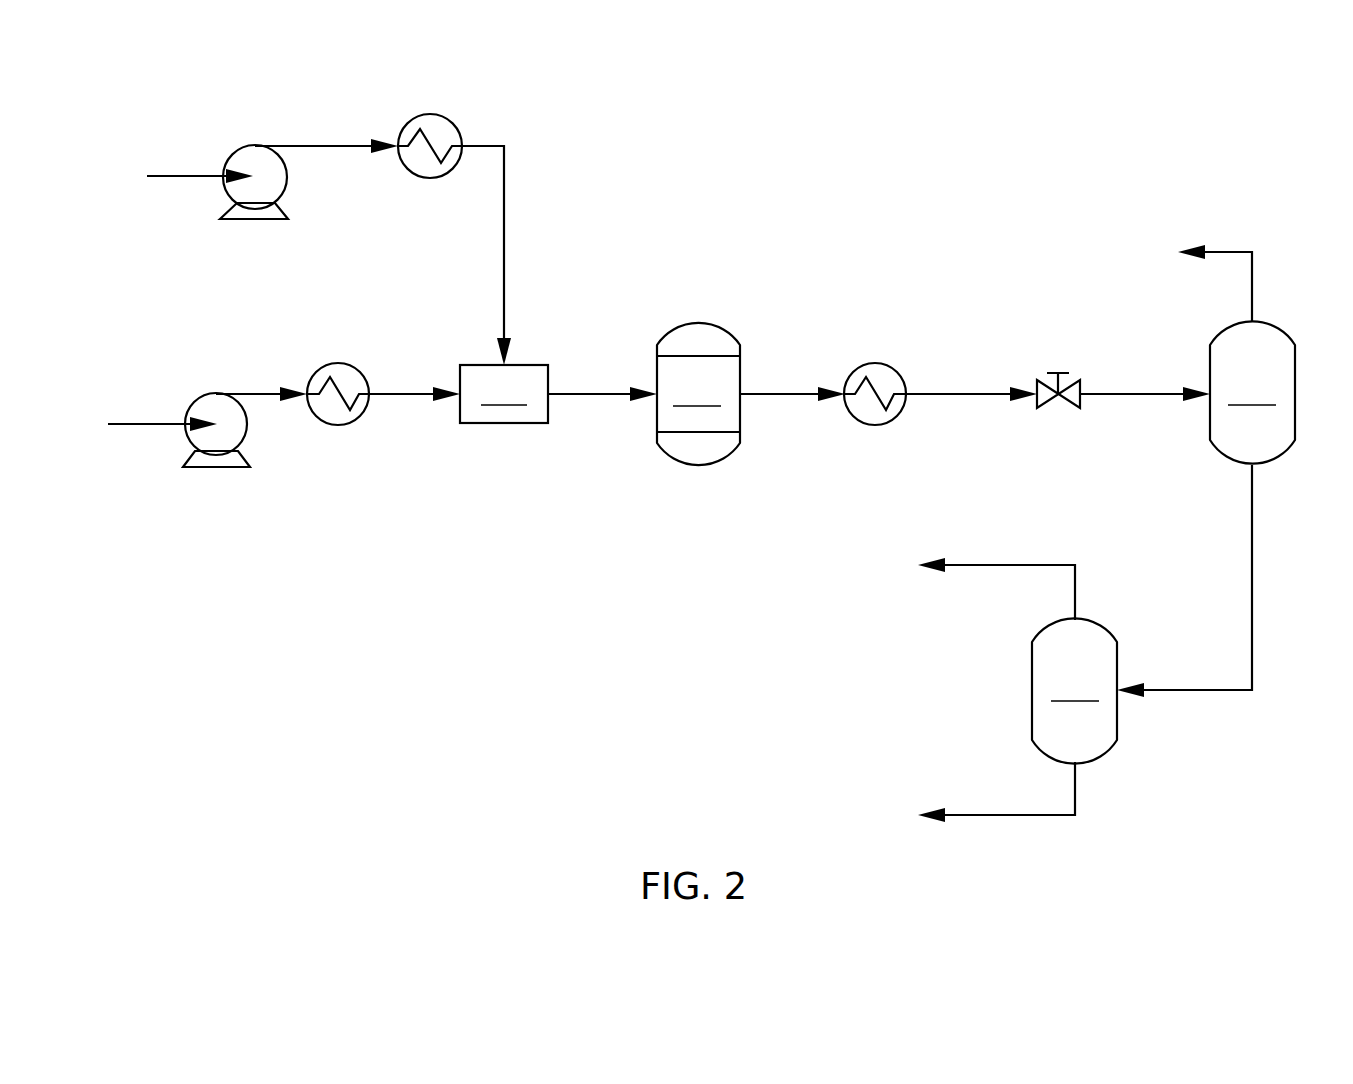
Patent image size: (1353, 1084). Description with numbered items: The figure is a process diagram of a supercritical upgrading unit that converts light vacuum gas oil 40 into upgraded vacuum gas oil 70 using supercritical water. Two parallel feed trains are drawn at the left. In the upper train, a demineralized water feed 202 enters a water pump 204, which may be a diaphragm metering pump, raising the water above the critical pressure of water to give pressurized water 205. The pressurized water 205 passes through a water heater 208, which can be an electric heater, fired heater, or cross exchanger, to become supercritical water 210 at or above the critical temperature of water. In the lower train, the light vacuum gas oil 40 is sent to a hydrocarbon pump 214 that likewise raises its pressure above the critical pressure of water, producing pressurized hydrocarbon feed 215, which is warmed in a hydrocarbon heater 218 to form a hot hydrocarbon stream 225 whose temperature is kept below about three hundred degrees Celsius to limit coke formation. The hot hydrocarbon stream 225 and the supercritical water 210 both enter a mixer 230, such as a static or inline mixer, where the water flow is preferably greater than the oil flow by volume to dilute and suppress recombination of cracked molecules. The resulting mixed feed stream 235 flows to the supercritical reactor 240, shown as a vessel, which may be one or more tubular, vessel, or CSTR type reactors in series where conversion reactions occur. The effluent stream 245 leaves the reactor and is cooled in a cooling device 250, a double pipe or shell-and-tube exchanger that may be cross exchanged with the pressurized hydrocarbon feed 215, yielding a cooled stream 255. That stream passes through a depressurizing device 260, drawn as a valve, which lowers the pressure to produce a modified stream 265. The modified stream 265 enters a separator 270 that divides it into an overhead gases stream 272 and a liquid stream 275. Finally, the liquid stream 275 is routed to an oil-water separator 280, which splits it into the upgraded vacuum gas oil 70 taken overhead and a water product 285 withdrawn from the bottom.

The light vacuum gas oil 40 is at (145, 424).
The upgraded vacuum gas oil 70 is at (1005, 563).
The water feed 202 is at (178, 175).
The water pump 204 is at (247, 220).
The pressurized water 205 is at (317, 145).
The water heater 208 is at (430, 178).
The supercritical water 210 is at (504, 214).
The hydrocarbon pump 214 is at (207, 467).
The pressurized hydrocarbon feed 215 is at (250, 394).
The hydrocarbon heater 218 is at (347, 422).
The hot hydrocarbon stream 225 is at (392, 394).
The mixer 230 is at (504, 394).
The mixed feed stream 235 is at (578, 394).
The supercritical reactor 240 is at (698, 394).
The effluent stream 245 is at (785, 394).
The cooling device 250 is at (873, 424).
The cooled stream 255 is at (948, 394).
The depressurizing device 260 is at (1053, 371).
The modified stream 265 is at (1152, 395).
The separator 270 is at (1252, 392).
The gases stream 272 is at (1232, 250).
The liquid stream 275 is at (1250, 542).
The oil-water separator 280 is at (1074, 690).
The water product 285 is at (993, 813).